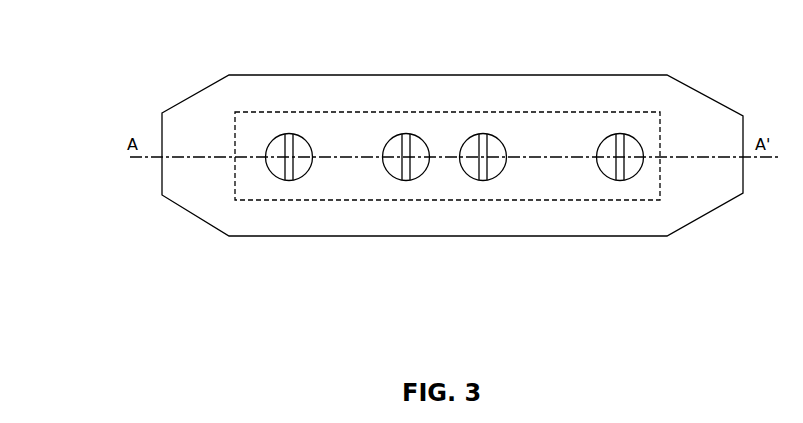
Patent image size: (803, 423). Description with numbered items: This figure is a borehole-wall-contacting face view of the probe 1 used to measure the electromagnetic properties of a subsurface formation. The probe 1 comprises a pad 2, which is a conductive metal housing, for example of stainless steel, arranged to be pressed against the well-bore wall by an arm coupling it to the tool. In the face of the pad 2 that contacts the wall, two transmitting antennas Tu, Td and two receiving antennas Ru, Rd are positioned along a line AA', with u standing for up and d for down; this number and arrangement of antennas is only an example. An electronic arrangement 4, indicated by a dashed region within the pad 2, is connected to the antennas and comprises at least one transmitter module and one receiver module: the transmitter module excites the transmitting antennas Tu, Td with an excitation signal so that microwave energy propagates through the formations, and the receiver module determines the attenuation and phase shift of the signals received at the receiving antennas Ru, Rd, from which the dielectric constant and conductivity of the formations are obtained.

The probe 1 is at (97, 75).
The pad 2 is at (202, 220).
The electronic arrangement 4 is at (624, 108).
The receiving antenna Ru is at (277, 185).
The transmitting antenna Tu is at (392, 185).
The transmitting antenna Td is at (469, 183).
The receiving antenna Rd is at (605, 183).